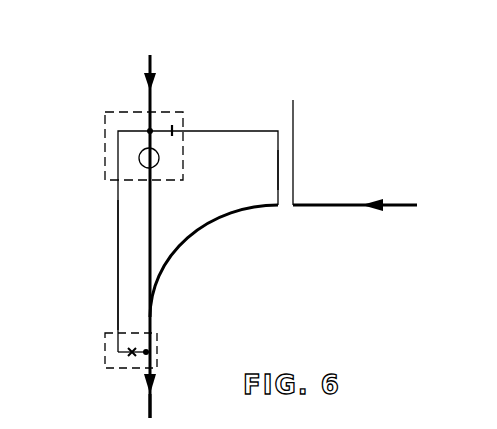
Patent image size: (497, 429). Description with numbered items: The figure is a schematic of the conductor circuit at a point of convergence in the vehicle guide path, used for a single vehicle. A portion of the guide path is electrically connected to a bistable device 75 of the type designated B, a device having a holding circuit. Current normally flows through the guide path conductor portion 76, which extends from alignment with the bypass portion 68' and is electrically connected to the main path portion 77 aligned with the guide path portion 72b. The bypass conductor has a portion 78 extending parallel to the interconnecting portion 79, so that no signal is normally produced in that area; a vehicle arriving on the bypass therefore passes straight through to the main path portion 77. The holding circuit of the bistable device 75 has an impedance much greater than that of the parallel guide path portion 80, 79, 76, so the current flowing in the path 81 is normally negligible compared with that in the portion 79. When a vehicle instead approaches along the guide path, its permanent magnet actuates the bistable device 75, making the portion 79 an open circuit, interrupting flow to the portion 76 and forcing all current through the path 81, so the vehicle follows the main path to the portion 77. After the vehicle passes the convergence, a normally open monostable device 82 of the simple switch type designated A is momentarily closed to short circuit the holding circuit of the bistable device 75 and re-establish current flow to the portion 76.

The guide path portion 72b is at (153, 71).
The bistable device 75 is at (105, 144).
The monostable device with holding circuit B is at (108, 170).
The guide path portion 80 is at (232, 133).
The interconnecting portion 79 is at (276, 162).
The conductor path portion 81 is at (152, 211).
The guide path conductor portion 76 is at (180, 246).
The bypass conductor portion 78 is at (294, 157).
The bypass portion 68' is at (355, 223).
The monostable device 82 is at (105, 340).
The monostable device of simple switch type A is at (105, 360).
The main path portion 77 is at (146, 405).